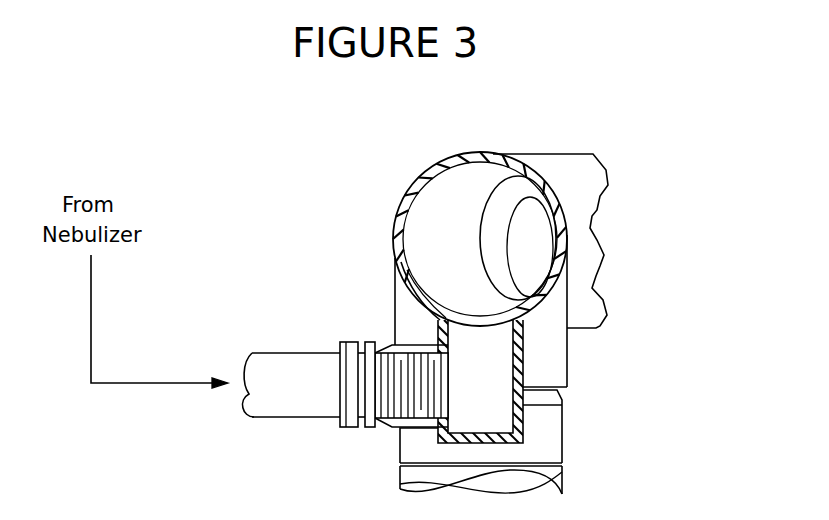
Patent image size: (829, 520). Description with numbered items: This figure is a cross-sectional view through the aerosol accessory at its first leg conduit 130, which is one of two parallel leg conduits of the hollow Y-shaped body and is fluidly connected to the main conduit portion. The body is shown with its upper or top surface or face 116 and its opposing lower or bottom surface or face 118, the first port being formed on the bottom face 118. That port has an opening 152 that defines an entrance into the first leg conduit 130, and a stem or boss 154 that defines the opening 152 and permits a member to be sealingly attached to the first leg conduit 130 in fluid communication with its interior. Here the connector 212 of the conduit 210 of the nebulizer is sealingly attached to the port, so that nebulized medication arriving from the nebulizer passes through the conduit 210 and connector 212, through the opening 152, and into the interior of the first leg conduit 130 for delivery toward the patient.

The upper or top surface or face 116 is at (558, 153).
The lower or bottom surface or face 118 is at (595, 330).
The first leg conduit 130 is at (438, 222).
The opening 152 is at (437, 297).
The stem or boss 154 is at (492, 405).
The conduit 210 is at (293, 390).
The connector 212 is at (340, 350).